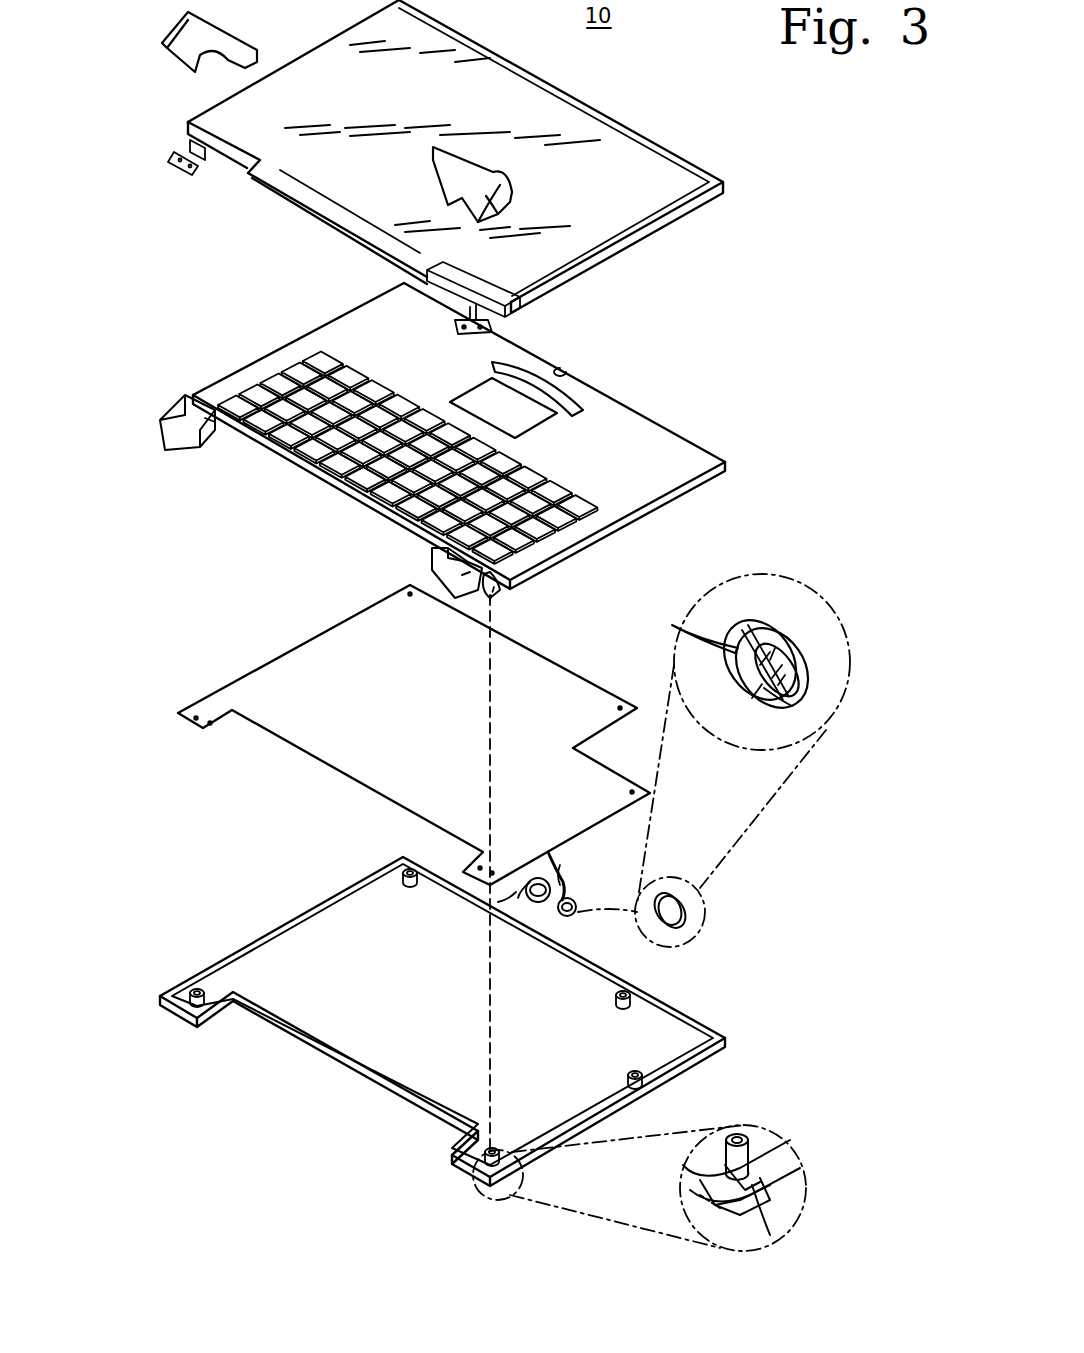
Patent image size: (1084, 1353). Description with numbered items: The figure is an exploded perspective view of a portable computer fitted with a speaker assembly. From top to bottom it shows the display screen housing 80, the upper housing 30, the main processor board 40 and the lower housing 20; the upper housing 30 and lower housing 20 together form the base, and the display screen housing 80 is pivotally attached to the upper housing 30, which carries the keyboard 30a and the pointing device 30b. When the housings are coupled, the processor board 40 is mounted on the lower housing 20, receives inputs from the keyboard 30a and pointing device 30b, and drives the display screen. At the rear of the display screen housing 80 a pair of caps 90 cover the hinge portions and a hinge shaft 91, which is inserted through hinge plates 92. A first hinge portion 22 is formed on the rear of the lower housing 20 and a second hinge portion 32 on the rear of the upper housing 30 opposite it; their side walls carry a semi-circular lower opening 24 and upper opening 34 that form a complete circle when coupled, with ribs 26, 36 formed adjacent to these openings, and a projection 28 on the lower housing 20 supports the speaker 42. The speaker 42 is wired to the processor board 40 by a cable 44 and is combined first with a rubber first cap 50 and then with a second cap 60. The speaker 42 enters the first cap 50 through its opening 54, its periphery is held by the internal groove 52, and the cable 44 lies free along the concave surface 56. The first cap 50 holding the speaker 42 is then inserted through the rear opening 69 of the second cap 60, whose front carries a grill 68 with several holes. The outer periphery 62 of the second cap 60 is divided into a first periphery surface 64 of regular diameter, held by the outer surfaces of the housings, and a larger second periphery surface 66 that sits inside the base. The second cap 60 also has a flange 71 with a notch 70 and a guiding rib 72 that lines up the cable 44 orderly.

The lower housing 20 is at (232, 928).
The first hinge portion 22 is at (688, 1205).
The lower opening 24 is at (760, 1185).
The rib 26 is at (755, 1180).
The projection 28 is at (770, 1235).
The upper housing 30 is at (222, 360).
The keyboard 30a is at (370, 480).
The pointing device 30b is at (525, 400).
The second hinge portion 32 is at (462, 592).
The upper opening 34 is at (500, 595).
The rib 36 is at (488, 600).
The main processor board 40 is at (292, 668).
The speaker 42 is at (575, 898).
The cable 44 is at (575, 870).
The first cap 50 is at (520, 905).
The internal groove 52 is at (530, 882).
The opening 54 is at (534, 902).
The concave surface of periphery 56 is at (548, 875).
The second cap 60 is at (803, 708).
The outer periphery 62 is at (852, 552).
The first periphery surface 64 is at (790, 625).
The second periphery surface 66 is at (790, 640).
The grill 68 is at (752, 695).
The opening 69 is at (745, 630).
The notch 70 is at (762, 700).
The flange 71 is at (775, 705).
The guiding rib 72 is at (678, 630).
The display screen housing 80 is at (630, 226).
The cap 90 is at (500, 172).
The hinge shaft 91 is at (190, 143).
The hinge plate 92 is at (175, 165).